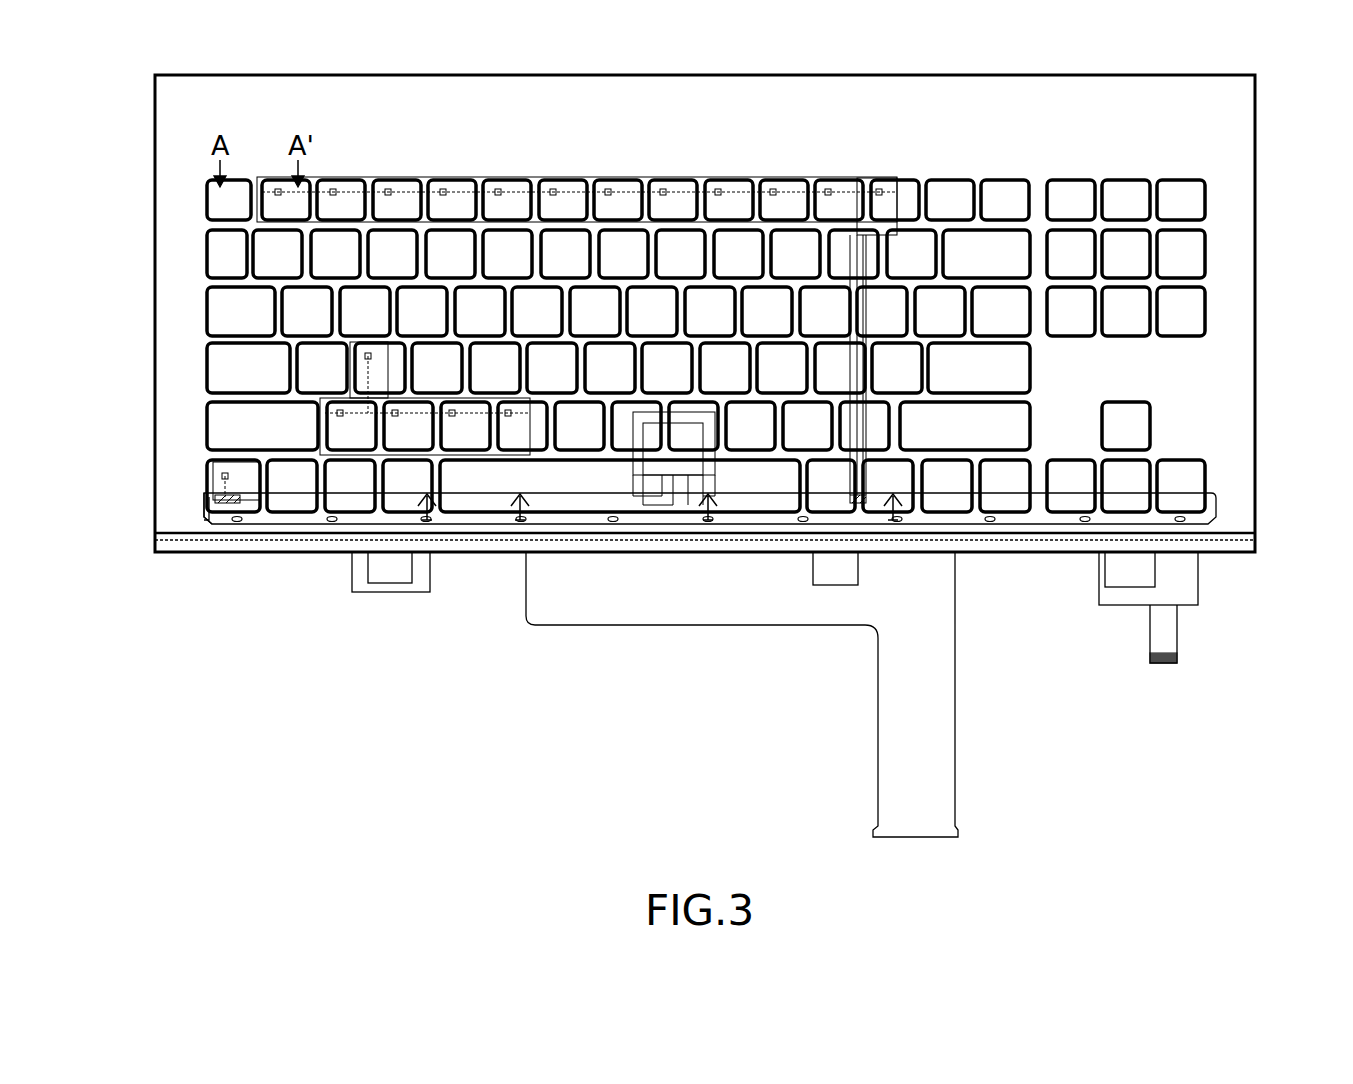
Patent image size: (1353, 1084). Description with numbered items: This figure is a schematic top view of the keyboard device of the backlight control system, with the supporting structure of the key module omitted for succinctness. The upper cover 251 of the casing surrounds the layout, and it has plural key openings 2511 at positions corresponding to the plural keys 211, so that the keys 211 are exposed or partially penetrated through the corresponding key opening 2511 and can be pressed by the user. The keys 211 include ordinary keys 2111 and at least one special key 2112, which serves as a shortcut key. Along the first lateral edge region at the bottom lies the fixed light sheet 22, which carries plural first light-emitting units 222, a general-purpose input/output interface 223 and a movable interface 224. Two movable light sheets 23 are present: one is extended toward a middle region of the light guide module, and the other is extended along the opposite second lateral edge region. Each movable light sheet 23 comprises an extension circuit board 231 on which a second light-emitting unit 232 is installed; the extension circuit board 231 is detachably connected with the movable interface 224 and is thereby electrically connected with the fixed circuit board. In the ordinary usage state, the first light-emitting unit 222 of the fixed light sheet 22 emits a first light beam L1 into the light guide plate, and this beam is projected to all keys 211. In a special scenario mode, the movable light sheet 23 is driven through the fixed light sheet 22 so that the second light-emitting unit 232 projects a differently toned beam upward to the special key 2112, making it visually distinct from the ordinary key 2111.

The fixed light sheet 22 is at (1220, 520).
The keys 211 is at (645, 438).
The ordinary key 2111 is at (315, 365).
The special key 2112 is at (350, 190).
The first light-emitting unit 222 is at (1212, 497).
The general-purpose input/output (GPIO) interface 223 is at (668, 465).
The movable interface 224 is at (238, 500).
The movable light sheet 23 is at (597, 188).
The extension circuit board 231 is at (888, 192).
The second light-emitting unit 232 is at (278, 193).
The upper cover 251 is at (1242, 245).
The key opening 2511 is at (205, 476).
The first light beam L1 is at (708, 505).